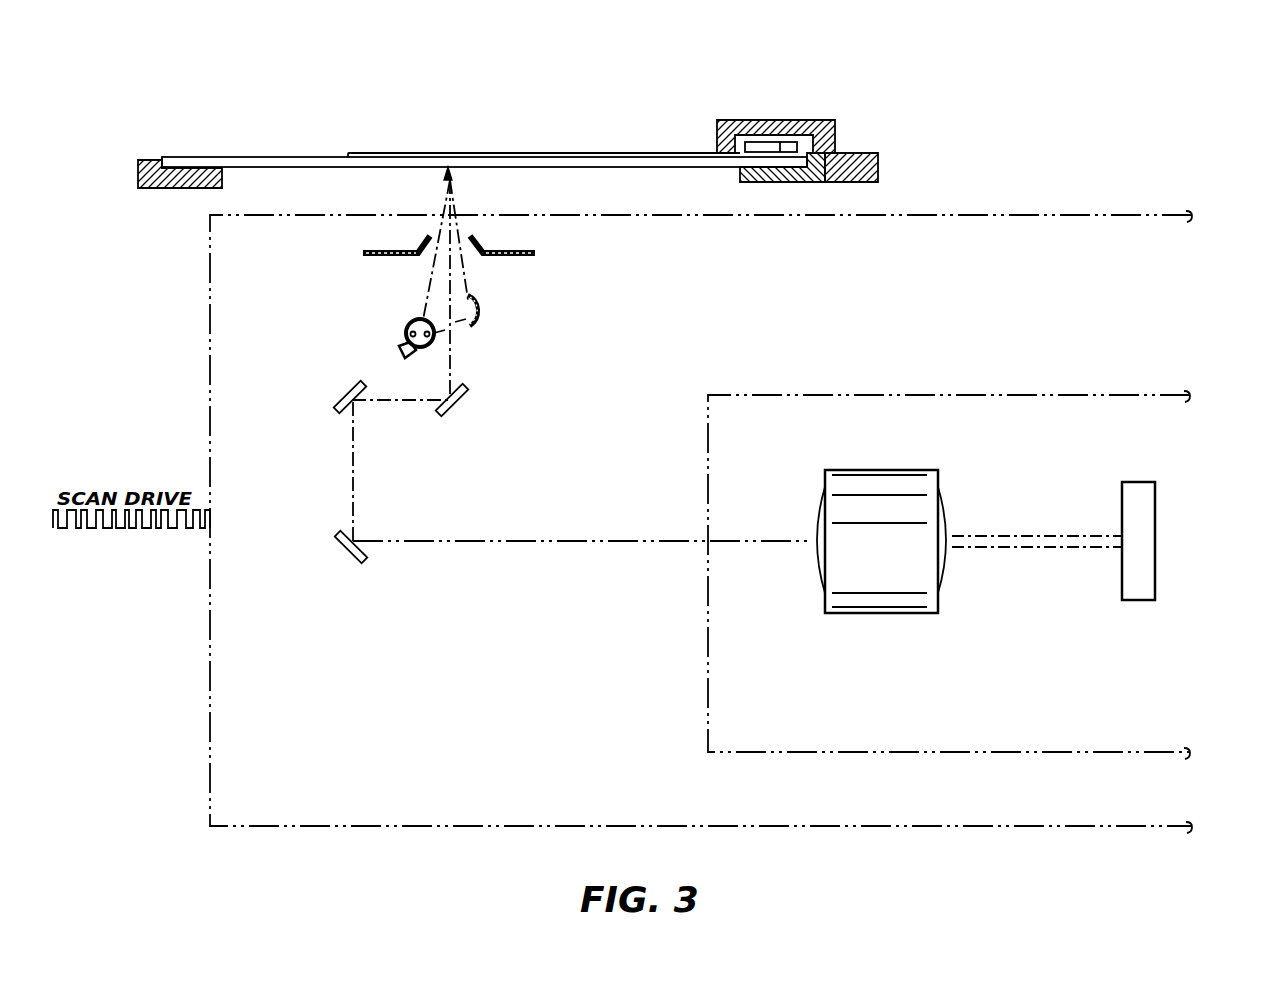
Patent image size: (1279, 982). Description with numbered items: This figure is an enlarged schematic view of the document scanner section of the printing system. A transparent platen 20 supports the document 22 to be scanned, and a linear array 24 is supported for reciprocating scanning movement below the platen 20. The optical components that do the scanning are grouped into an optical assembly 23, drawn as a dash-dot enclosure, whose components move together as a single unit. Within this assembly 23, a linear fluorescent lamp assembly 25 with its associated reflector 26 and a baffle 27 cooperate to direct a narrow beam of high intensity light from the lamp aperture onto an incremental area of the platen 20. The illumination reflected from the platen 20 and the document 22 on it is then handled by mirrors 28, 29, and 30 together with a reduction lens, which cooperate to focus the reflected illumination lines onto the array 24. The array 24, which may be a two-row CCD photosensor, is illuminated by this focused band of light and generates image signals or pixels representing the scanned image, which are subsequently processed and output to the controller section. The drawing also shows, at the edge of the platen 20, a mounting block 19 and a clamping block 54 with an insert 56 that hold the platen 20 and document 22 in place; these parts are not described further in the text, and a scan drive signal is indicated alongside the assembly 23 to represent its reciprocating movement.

The mounting block 19 is at (787, 182).
The transparent platen 20 is at (237, 158).
The document 22 is at (467, 152).
The optical assembly 23 is at (1140, 171).
The linear array 24 is at (1128, 592).
The linear fluorescent lamp assembly 25 is at (405, 330).
The reflector 26 is at (479, 314).
The baffle 27 is at (535, 256).
The mirror 28 is at (455, 403).
The mirror 29 is at (337, 406).
The mirror 30 is at (349, 551).
The clamp block 54 is at (778, 122).
The clamp insert 56 is at (717, 132).